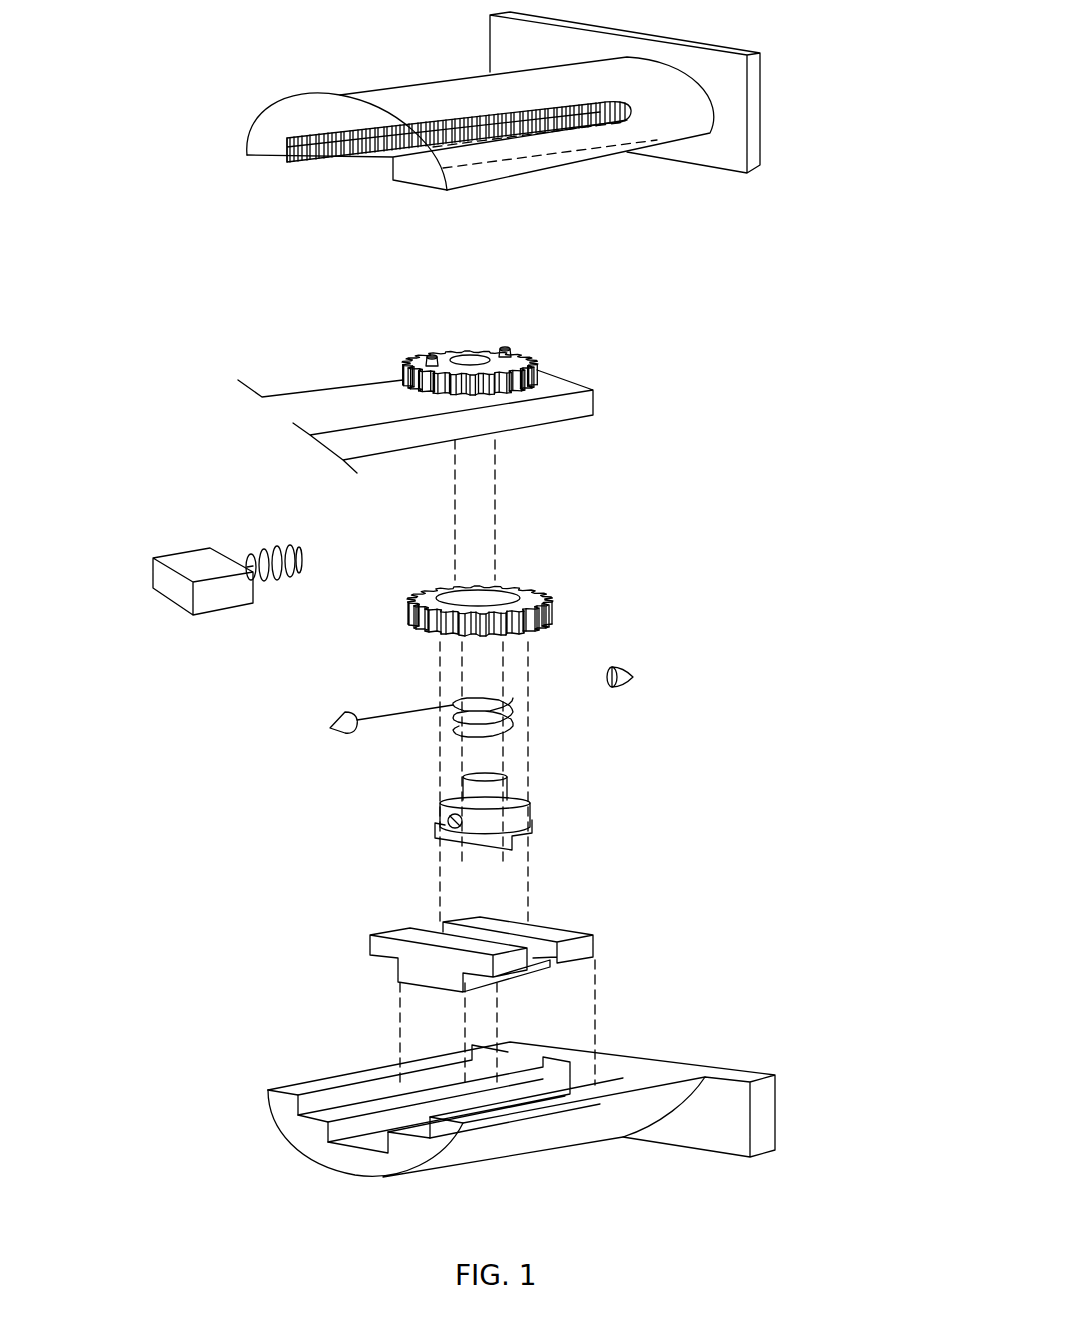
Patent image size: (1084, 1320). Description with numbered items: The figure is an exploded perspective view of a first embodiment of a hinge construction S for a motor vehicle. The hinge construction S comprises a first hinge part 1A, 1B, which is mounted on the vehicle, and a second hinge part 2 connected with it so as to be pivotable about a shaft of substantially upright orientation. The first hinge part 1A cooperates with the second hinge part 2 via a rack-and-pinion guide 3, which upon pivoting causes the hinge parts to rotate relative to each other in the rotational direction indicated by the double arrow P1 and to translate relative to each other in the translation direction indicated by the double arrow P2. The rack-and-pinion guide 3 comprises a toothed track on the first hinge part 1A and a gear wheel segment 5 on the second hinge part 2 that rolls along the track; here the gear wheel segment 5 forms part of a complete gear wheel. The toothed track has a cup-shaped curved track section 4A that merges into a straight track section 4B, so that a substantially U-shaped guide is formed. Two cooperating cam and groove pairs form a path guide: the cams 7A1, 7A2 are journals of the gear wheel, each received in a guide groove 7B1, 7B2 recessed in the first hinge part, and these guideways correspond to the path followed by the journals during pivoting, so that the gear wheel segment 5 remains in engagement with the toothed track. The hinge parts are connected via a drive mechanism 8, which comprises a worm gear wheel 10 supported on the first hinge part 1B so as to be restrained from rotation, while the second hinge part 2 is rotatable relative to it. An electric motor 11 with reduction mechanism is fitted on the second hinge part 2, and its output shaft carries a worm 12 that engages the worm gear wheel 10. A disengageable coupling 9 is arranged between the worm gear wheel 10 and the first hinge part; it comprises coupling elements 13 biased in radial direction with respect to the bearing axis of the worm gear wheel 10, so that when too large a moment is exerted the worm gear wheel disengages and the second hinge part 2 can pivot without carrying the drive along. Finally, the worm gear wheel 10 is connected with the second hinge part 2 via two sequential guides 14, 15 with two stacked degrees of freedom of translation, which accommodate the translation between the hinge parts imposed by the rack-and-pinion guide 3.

The hinge construction S is at (783, 75).
The first hinge part 1A is at (771, 161).
The first hinge part 1B is at (575, 1073).
The second hinge part 2 is at (584, 399).
The rack-and-pinion guide 3 is at (296, 171).
The track section of curved configuration 4A is at (626, 164).
The straight track section 4B is at (333, 160).
The gear wheel segment 5 is at (503, 379).
The cam 7A1 is at (513, 351).
The cam 7A2 is at (426, 355).
The guide groove 7B1 is at (554, 184).
The guide groove 7B2 is at (468, 201).
The drive mechanism 8 is at (230, 611).
The disengageable coupling 9 is at (672, 677).
The worm gear wheel 10 is at (534, 613).
The electric motor 11 is at (222, 592).
The worm 12 is at (284, 579).
The coupling element 13 is at (342, 731).
The guide 14 is at (428, 964).
The guide 15 is at (594, 940).
The rotational direction P1 is at (435, 330).
The translation direction P2 is at (328, 333).